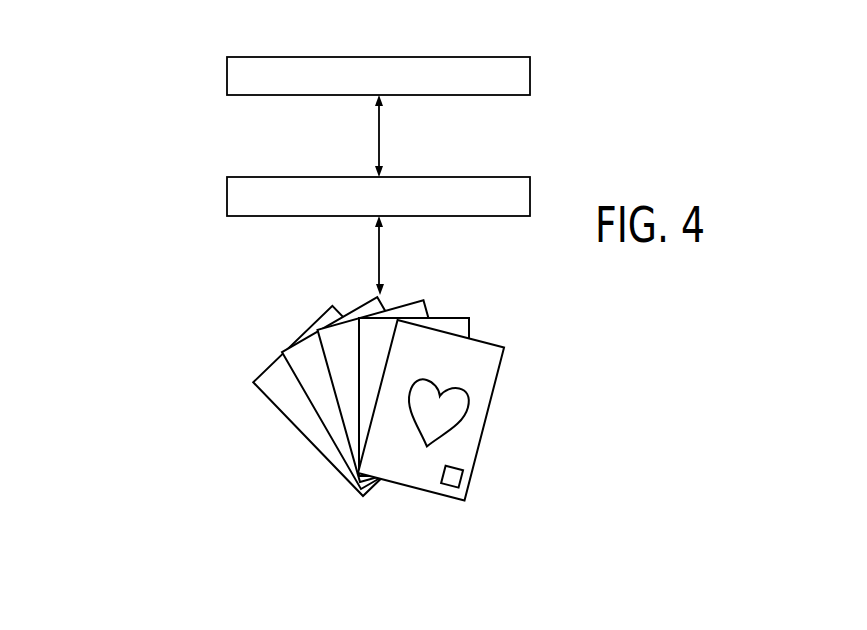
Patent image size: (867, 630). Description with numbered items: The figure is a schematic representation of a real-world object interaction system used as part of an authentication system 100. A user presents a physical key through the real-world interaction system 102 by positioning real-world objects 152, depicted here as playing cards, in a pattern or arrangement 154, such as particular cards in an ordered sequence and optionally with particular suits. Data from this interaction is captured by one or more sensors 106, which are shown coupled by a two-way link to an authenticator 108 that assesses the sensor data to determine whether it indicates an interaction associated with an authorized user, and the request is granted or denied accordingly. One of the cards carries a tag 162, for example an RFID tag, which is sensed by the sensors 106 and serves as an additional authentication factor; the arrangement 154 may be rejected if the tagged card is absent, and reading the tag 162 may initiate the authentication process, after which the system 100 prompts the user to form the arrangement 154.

The authentication system 100 is at (128, 51).
The authenticator 108 is at (453, 57).
The sensors 106 is at (453, 177).
The real-world interaction system 102 is at (340, 423).
The real-world objects 152 is at (291, 402).
The pattern or arrangement 154 is at (391, 507).
The tag 162 is at (458, 481).